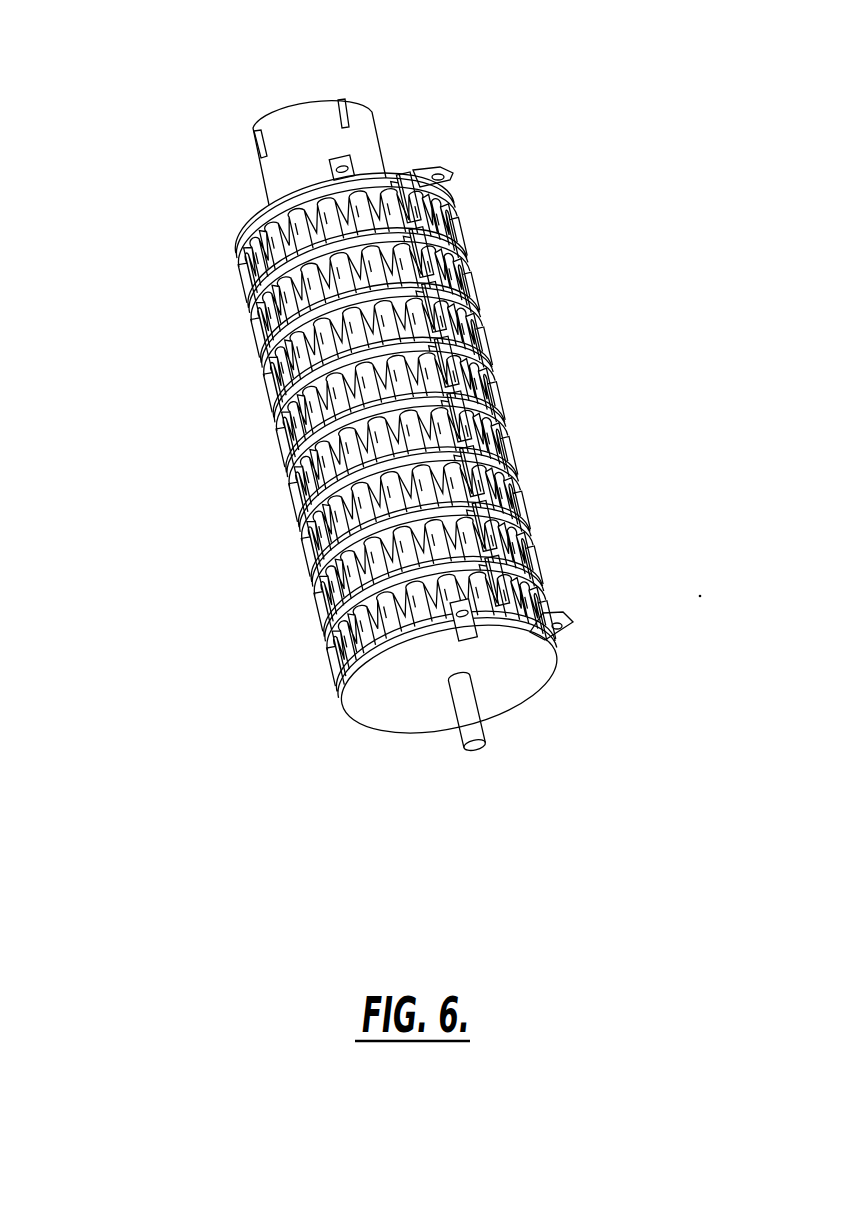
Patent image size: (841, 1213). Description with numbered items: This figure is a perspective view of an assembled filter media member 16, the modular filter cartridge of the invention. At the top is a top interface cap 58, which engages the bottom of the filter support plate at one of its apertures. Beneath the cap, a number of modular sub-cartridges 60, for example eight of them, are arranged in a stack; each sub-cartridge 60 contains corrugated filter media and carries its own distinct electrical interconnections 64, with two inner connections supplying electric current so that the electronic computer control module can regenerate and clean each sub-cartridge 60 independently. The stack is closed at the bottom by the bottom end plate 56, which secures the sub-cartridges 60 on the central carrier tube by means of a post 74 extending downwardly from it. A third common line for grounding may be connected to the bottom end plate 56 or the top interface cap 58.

The filter media member 16 is at (551, 318).
The bottom end plate 56 is at (527, 677).
The top interface cap 58 is at (357, 123).
The sub-cartridges 60 is at (243, 288).
The electrical interconnections 64 is at (452, 180).
The post 74 is at (462, 748).